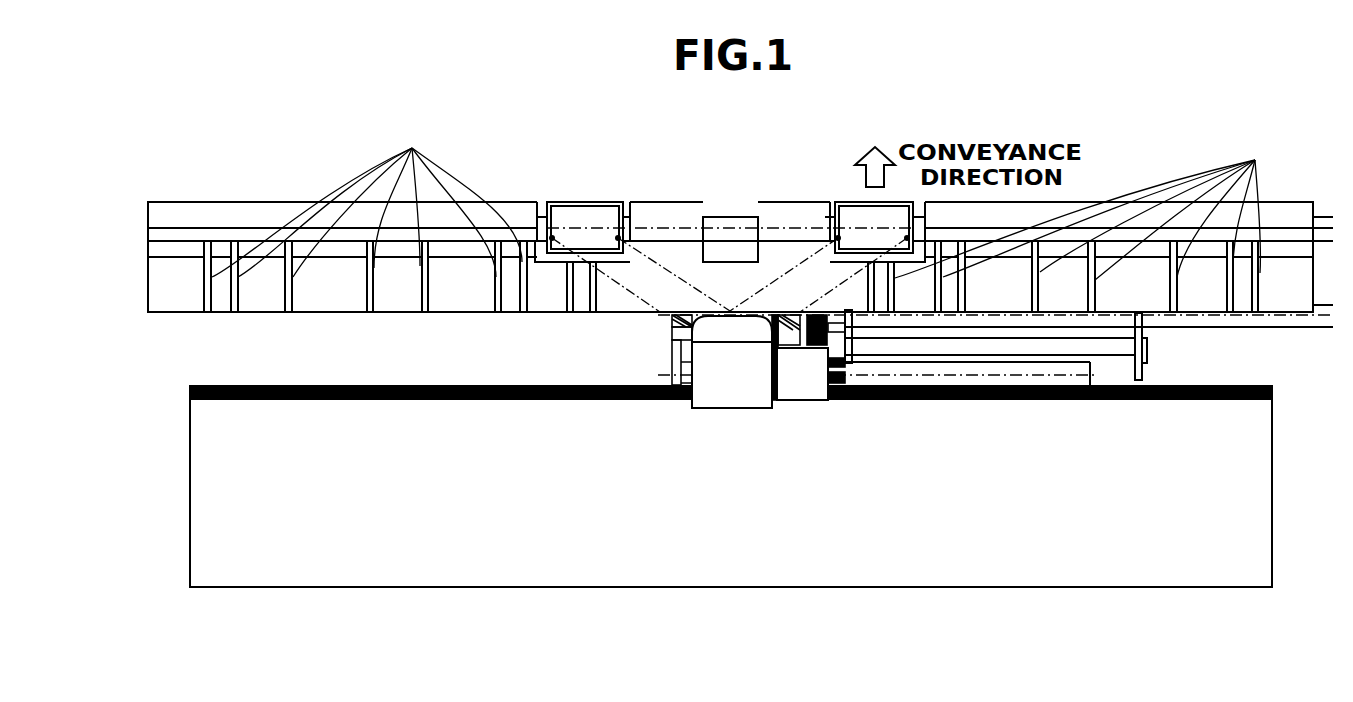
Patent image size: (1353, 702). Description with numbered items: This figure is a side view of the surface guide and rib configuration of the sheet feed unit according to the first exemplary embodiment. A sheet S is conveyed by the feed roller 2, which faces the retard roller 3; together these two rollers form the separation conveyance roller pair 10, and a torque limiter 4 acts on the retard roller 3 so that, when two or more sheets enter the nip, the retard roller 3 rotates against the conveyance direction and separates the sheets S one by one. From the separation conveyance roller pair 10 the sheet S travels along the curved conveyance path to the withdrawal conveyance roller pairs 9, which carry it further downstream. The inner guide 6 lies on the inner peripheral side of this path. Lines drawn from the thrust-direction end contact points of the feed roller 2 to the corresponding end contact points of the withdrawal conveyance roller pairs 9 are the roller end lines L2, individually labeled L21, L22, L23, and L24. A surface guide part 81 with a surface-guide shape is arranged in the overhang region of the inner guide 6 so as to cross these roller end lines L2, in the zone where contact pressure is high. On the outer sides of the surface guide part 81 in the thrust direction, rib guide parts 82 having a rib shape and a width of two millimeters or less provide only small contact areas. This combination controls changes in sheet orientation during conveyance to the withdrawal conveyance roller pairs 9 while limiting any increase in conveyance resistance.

The inner guide 6 is at (221, 217).
The rib guide parts 82 is at (743, 201).
The withdrawal conveyance roller pairs 9 is at (587, 213).
The surface guide part 81 is at (737, 283).
The feed roller 2 is at (720, 330).
The retard roller 3 is at (737, 385).
The torque limiter 4 is at (818, 387).
The separation conveyance roller pair 10 is at (770, 452).
The sheet S is at (205, 488).
The roller end line L21 is at (630, 288).
The roller end line L22 is at (673, 272).
The roller end line L23 is at (783, 275).
The roller end line L24 is at (853, 273).
The roller end lines L2 is at (917, 520).